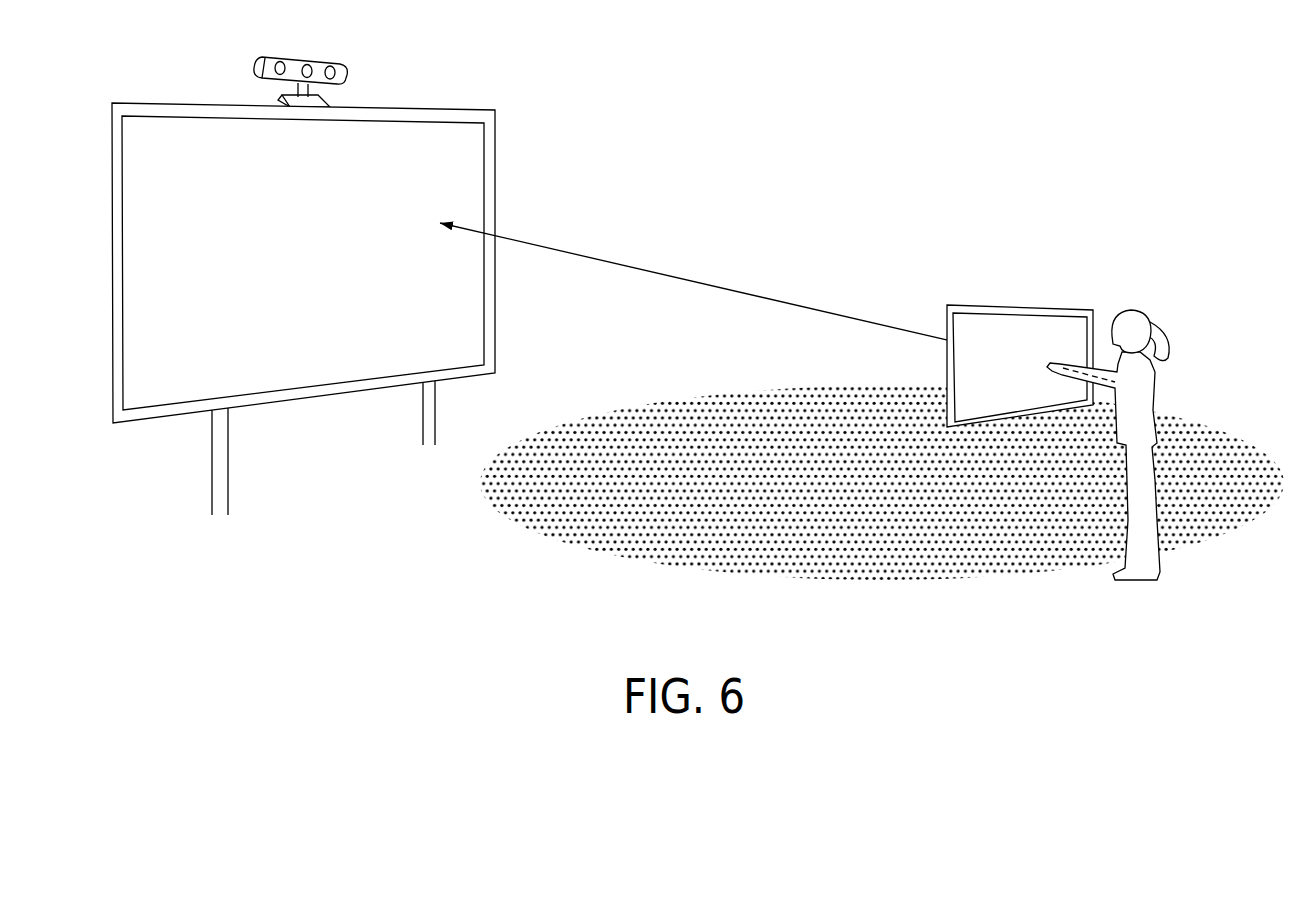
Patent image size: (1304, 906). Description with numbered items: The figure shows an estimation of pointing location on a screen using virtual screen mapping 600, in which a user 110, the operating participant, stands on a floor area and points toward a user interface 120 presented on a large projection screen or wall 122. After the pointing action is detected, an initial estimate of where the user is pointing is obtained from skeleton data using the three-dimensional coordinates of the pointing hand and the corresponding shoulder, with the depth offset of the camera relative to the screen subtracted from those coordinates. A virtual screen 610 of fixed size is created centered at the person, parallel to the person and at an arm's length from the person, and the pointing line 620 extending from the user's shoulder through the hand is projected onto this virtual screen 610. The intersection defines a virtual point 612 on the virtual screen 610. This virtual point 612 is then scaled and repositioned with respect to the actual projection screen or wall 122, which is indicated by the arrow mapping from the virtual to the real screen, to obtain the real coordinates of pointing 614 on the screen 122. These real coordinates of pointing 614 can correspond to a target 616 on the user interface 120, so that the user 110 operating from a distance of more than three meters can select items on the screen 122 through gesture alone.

The virtual screen mapping 600 is at (1059, 132).
The screen 122 is at (387, 152).
The user interface 120 is at (327, 433).
The target 616 is at (404, 223).
The real coordinates of pointing 614 is at (424, 263).
The virtual screen 610 is at (1012, 265).
The virtual point 612 is at (993, 400).
The user 110 is at (1178, 342).
The pointing line 620 is at (1102, 373).